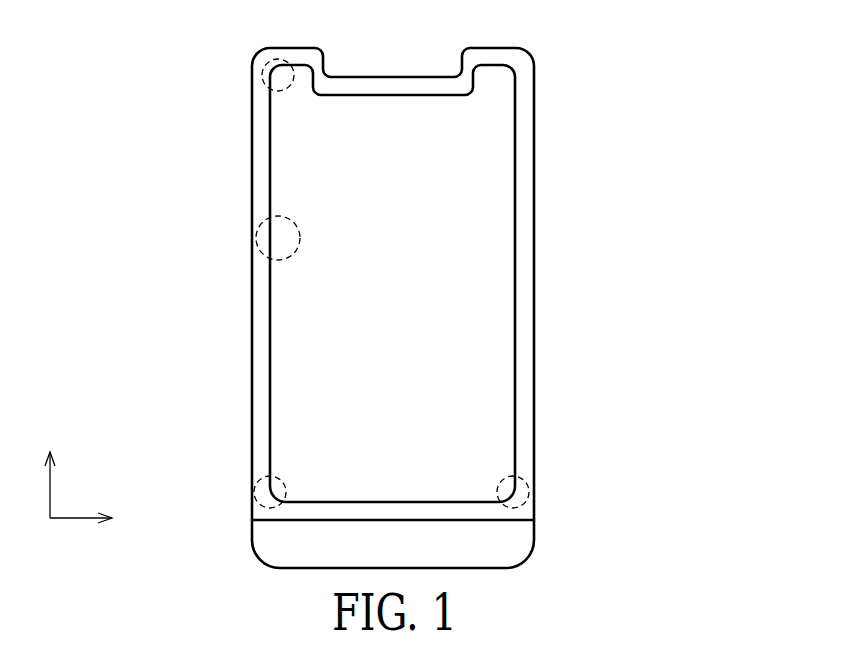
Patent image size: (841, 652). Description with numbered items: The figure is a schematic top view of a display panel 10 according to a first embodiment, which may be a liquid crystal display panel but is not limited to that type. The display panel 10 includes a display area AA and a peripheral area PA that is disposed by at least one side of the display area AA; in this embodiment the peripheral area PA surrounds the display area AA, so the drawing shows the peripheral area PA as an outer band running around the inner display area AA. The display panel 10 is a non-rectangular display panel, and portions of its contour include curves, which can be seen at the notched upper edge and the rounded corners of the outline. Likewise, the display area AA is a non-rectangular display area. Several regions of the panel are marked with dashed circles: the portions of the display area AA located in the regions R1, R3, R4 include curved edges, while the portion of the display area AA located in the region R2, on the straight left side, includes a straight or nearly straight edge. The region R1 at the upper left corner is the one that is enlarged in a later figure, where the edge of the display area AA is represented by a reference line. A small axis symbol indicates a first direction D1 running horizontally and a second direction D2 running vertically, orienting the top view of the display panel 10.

The display panel 10 is at (610, 84).
The peripheral area PA is at (527, 243).
The display area AA is at (507, 292).
The region R1 is at (266, 60).
The region R2 is at (261, 217).
The region R3 is at (257, 504).
The region R4 is at (525, 505).
The first direction D1 is at (100, 521).
The second direction D2 is at (50, 468).